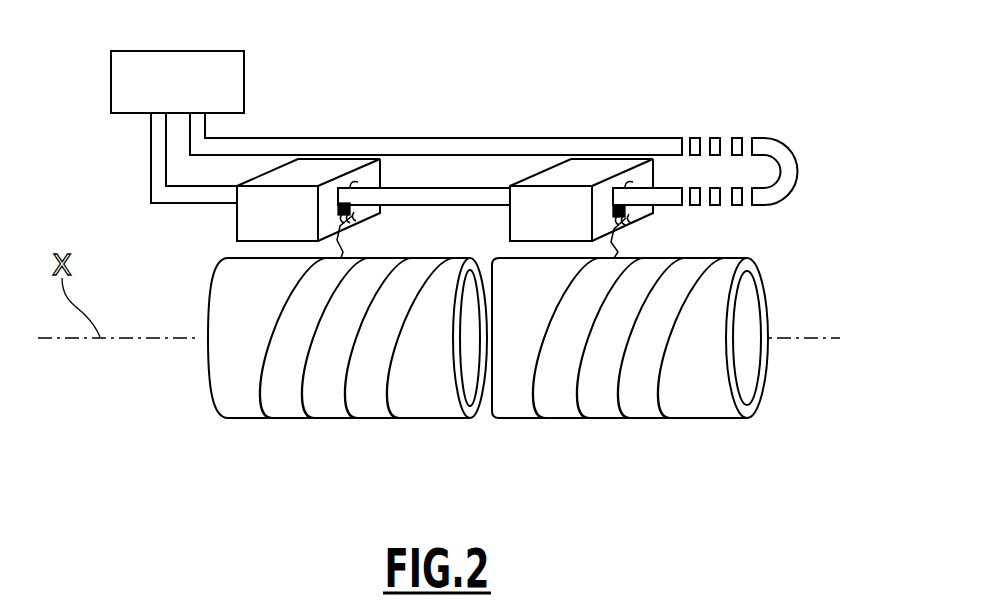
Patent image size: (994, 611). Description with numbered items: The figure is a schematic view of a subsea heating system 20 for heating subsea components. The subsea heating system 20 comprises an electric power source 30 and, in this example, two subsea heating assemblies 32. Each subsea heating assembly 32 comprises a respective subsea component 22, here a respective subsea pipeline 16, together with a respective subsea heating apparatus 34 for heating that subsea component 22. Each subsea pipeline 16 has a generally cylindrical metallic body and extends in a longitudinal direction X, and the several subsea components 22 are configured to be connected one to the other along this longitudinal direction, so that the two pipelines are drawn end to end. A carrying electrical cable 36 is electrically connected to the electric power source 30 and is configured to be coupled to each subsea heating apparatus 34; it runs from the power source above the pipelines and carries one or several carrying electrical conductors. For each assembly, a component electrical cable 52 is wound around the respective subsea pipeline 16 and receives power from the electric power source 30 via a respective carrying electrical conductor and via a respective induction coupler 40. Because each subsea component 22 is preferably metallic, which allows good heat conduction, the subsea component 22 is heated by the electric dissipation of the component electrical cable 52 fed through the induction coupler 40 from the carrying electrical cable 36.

The subsea pipeline 16 is at (473, 338).
The subsea heating system 20 is at (535, 77).
The subsea component 22 is at (463, 457).
The electric power source 30 is at (177, 82).
The subsea heating assembly 32 is at (282, 490).
The subsea heating apparatus 34 is at (408, 228).
The carrying electrical cable 36 is at (428, 138).
The induction coupler 40 is at (587, 167).
The component electrical cable 52 is at (278, 308).